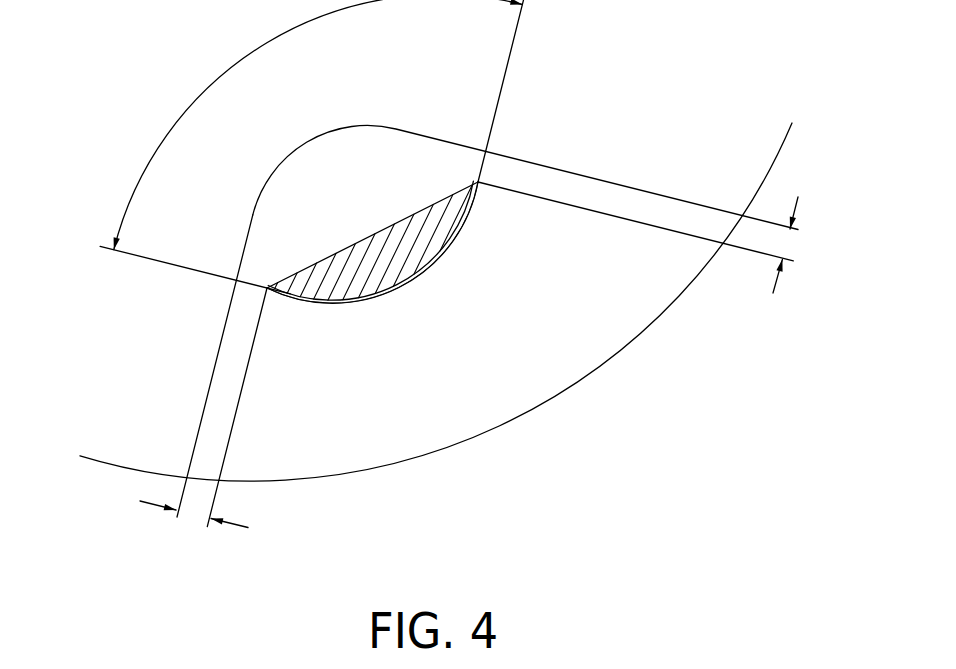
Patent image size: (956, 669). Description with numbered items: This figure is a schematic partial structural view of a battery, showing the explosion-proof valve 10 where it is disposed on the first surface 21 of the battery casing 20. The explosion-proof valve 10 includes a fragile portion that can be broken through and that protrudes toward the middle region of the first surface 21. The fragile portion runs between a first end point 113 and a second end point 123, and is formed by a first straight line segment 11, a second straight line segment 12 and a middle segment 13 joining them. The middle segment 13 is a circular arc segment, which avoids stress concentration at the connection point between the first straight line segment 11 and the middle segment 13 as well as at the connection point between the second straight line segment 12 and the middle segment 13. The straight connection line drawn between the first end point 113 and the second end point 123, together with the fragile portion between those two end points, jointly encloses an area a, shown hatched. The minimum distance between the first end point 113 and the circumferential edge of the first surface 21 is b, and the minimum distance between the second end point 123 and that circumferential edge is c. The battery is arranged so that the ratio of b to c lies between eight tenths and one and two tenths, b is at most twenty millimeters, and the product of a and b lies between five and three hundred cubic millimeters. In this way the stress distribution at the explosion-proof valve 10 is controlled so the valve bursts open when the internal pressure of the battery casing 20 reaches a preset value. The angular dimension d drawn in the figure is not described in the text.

The explosion-proof valve 10 is at (418, 302).
The first straight line segment 11 is at (297, 271).
The second straight line segment 12 is at (462, 228).
The middle segment 13 is at (437, 273).
The first end point 113 is at (267, 288).
The second end point 123 is at (478, 181).
The battery casing 20 is at (543, 407).
The first surface 21 is at (227, 382).
The area enclosed by connection line and fragile portion a is at (380, 262).
The minimum distance between first end point and circumferential edge b is at (194, 503).
The minimum distance between second end point and circumferential edge c is at (774, 245).
The angle d is at (318, 125).